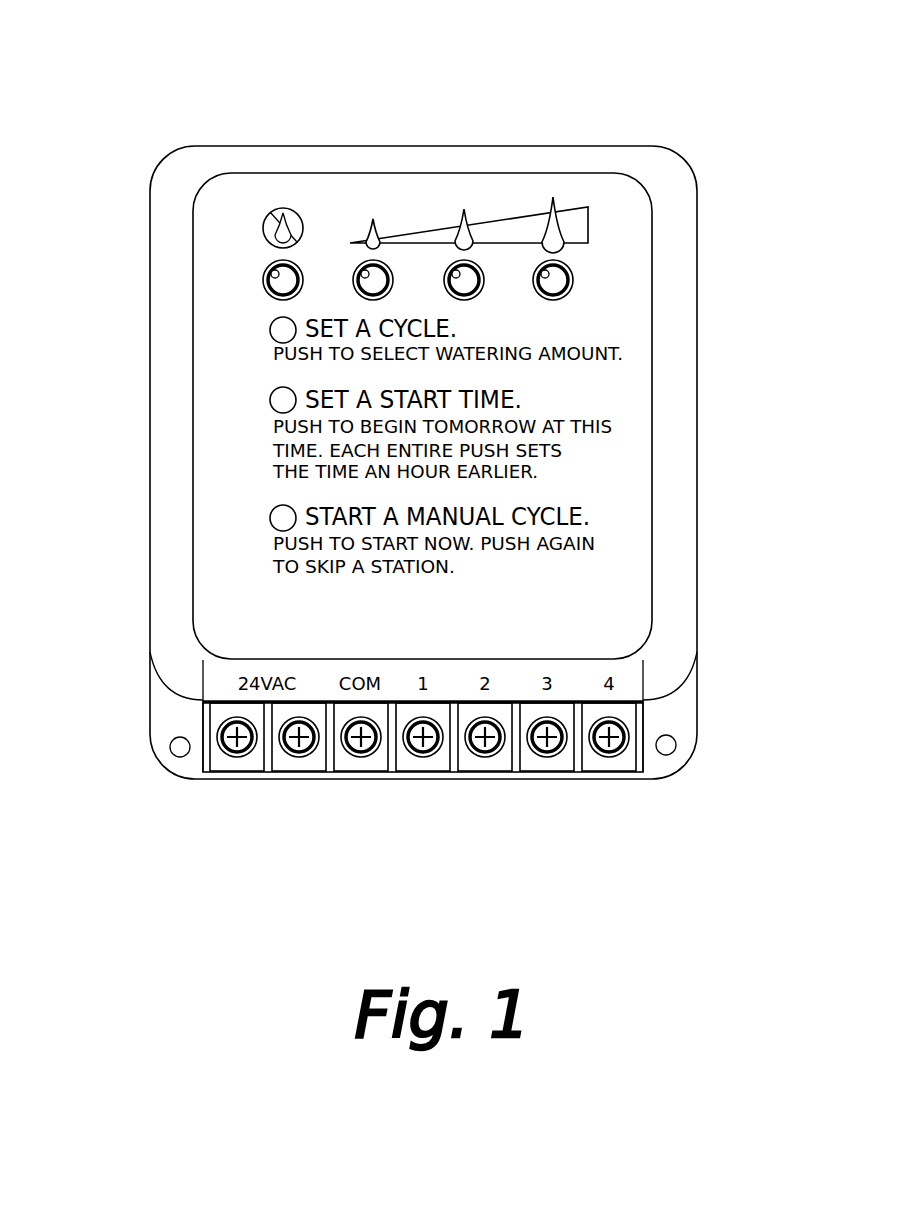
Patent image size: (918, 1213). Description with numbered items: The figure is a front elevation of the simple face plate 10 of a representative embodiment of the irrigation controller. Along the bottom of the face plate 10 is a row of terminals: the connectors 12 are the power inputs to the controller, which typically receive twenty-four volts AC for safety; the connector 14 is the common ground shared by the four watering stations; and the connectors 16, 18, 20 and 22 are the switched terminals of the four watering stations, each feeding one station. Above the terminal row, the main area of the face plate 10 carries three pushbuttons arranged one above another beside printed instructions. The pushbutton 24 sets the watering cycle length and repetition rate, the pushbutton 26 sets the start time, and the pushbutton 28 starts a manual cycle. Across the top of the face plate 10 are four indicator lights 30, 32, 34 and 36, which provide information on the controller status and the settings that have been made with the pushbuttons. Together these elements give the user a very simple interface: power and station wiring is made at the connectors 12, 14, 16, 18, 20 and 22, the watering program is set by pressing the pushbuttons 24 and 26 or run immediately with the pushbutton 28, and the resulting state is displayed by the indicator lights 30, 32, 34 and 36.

The face plate 10 is at (590, 145).
The connectors 12 is at (243, 758).
The connector 14 is at (365, 760).
The connector 16 is at (433, 757).
The connector 18 is at (494, 763).
The connector 20 is at (558, 757).
The connector 22 is at (615, 760).
The pushbutton 24 is at (270, 331).
The pushbutton 26 is at (270, 402).
The pushbutton 28 is at (270, 518).
The indicator light 30 is at (264, 288).
The indicator light 32 is at (356, 282).
The indicator light 34 is at (446, 280).
The indicator light 36 is at (573, 277).